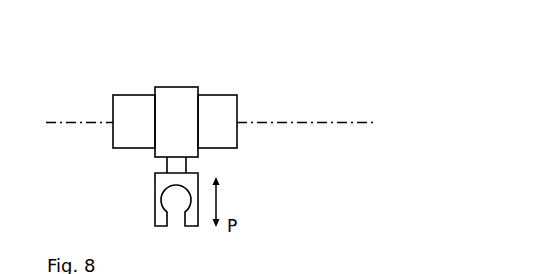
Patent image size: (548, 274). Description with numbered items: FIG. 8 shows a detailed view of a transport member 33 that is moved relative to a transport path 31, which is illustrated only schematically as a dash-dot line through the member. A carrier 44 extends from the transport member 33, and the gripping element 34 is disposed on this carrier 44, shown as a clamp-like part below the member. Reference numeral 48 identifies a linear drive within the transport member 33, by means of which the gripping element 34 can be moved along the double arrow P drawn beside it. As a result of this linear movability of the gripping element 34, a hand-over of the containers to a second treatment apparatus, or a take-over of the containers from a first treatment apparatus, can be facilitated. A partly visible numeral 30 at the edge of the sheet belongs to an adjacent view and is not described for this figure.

The device 30 is at (547, 250).
The transport path 31 is at (298, 122).
The transport member 33 is at (181, 86).
The gripping element 34 is at (180, 203).
The carrier 44 is at (177, 169).
The linear drive 48 is at (183, 117).